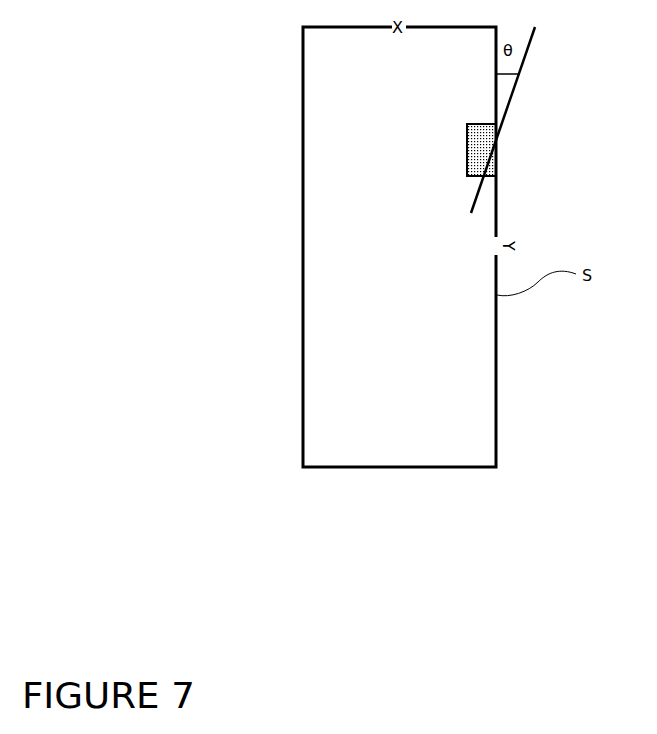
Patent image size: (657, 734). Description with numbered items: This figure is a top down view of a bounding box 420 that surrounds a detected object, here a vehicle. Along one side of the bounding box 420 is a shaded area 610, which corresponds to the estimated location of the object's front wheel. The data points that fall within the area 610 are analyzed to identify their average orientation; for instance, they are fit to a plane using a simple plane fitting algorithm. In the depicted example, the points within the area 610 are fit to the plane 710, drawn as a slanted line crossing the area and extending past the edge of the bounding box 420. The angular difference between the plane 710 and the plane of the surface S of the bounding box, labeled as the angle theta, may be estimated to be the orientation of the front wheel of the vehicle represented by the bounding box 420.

The bounding box 420 is at (302, 203).
The area 610 is at (465, 140).
The plane 710 is at (508, 110).